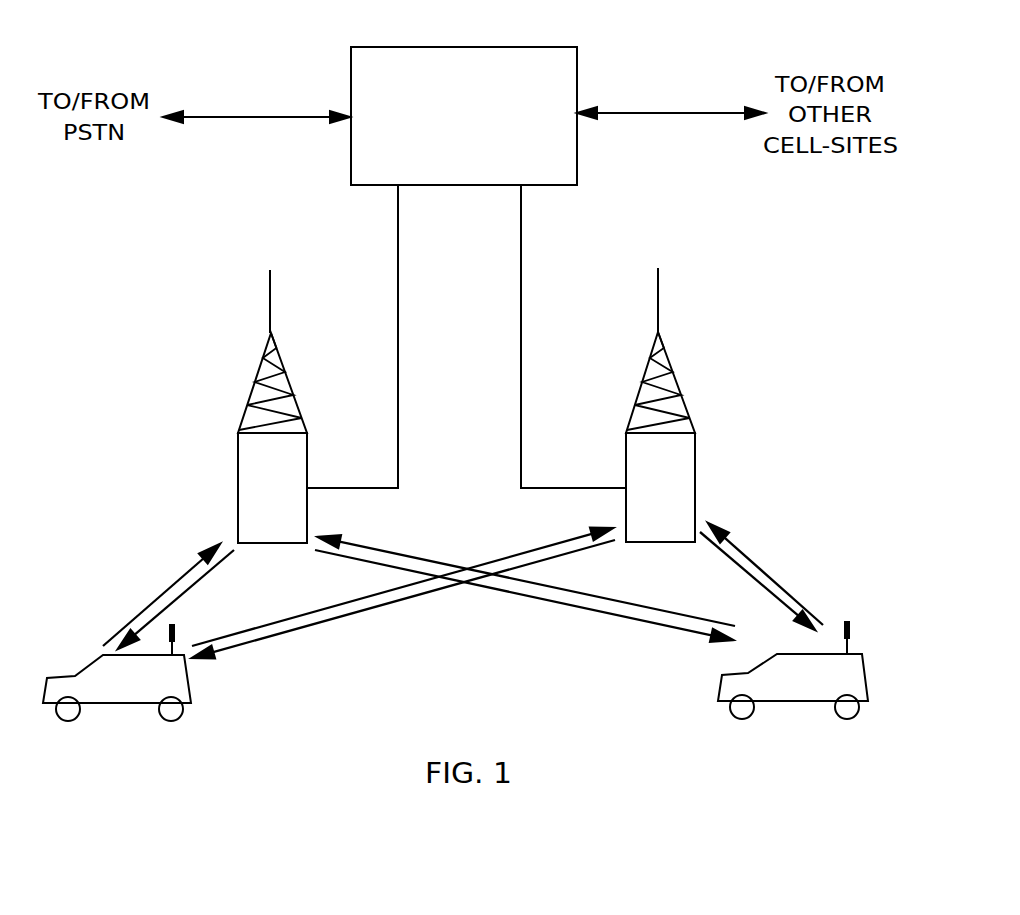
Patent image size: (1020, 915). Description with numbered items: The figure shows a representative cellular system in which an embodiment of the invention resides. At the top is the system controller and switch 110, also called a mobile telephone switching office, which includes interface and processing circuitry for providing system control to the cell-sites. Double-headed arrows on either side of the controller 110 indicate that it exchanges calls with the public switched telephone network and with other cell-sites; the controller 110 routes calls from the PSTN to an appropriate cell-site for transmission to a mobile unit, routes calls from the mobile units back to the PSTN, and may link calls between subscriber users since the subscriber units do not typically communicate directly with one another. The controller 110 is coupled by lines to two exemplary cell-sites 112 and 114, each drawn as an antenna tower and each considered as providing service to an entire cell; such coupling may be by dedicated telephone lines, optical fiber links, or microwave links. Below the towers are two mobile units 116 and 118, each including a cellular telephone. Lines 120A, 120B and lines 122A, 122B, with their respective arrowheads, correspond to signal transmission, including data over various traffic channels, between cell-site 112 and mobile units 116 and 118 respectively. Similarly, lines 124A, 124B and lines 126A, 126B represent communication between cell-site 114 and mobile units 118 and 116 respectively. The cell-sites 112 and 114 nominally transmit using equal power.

The system controller and switch 110 is at (512, 47).
The cell-site 112 is at (258, 376).
The cell-site 114 is at (676, 374).
The mobile unit 116 is at (148, 705).
The mobile unit 118 is at (823, 703).
The line 120A is at (193, 584).
The line 120B is at (185, 577).
The line 122A is at (615, 617).
The line 122B is at (372, 545).
The line 124A is at (737, 572).
The line 124B is at (753, 561).
The line 126A is at (348, 617).
The line 126B is at (545, 547).